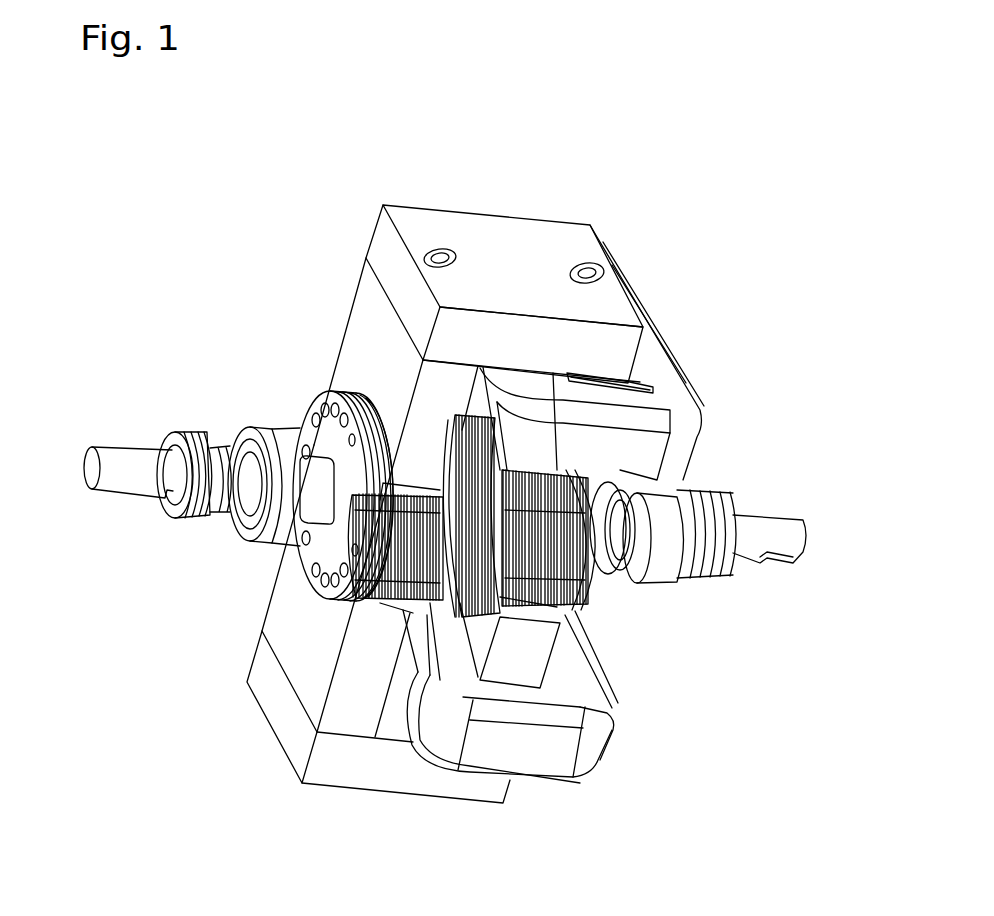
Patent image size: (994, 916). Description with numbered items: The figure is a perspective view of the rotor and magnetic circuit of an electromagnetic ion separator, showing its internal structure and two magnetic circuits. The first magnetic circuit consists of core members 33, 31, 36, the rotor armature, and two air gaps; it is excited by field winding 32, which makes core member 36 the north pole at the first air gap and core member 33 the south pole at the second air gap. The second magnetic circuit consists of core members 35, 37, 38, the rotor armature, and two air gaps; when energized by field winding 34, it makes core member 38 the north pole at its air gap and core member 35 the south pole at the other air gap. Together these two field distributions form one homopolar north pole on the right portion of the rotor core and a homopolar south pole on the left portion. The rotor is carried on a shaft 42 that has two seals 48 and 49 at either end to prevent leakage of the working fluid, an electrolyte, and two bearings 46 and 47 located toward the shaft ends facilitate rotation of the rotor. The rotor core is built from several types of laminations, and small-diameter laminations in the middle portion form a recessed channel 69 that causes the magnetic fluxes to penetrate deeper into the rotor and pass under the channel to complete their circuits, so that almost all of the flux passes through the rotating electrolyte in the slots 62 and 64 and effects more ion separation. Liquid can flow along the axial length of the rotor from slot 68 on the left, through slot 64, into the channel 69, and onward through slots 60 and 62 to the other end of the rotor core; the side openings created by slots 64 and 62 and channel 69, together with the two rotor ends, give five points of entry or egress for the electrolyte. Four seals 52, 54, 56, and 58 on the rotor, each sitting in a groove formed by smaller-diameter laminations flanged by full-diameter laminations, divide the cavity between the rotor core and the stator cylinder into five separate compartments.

The core member 31 is at (578, 245).
The field winding 32 is at (667, 377).
The core member 33 is at (365, 290).
The field winding 34 is at (593, 752).
The core member 35 is at (342, 697).
The core member 36 is at (578, 492).
The core member 37 is at (340, 767).
The core member 38 is at (516, 652).
The shaft 42 is at (108, 445).
The bearing 46 is at (262, 542).
The bearing 47 is at (638, 542).
The seal 48 is at (177, 428).
The seal 49 is at (713, 578).
The seal 52 is at (360, 507).
The seal 54 is at (443, 533).
The seal 56 is at (505, 535).
The seal 58 is at (600, 553).
The slot 60 is at (478, 575).
The slot 62 is at (565, 592).
The slot 64 is at (393, 552).
The slot 68 is at (340, 542).
The recessed channel 69 is at (471, 468).